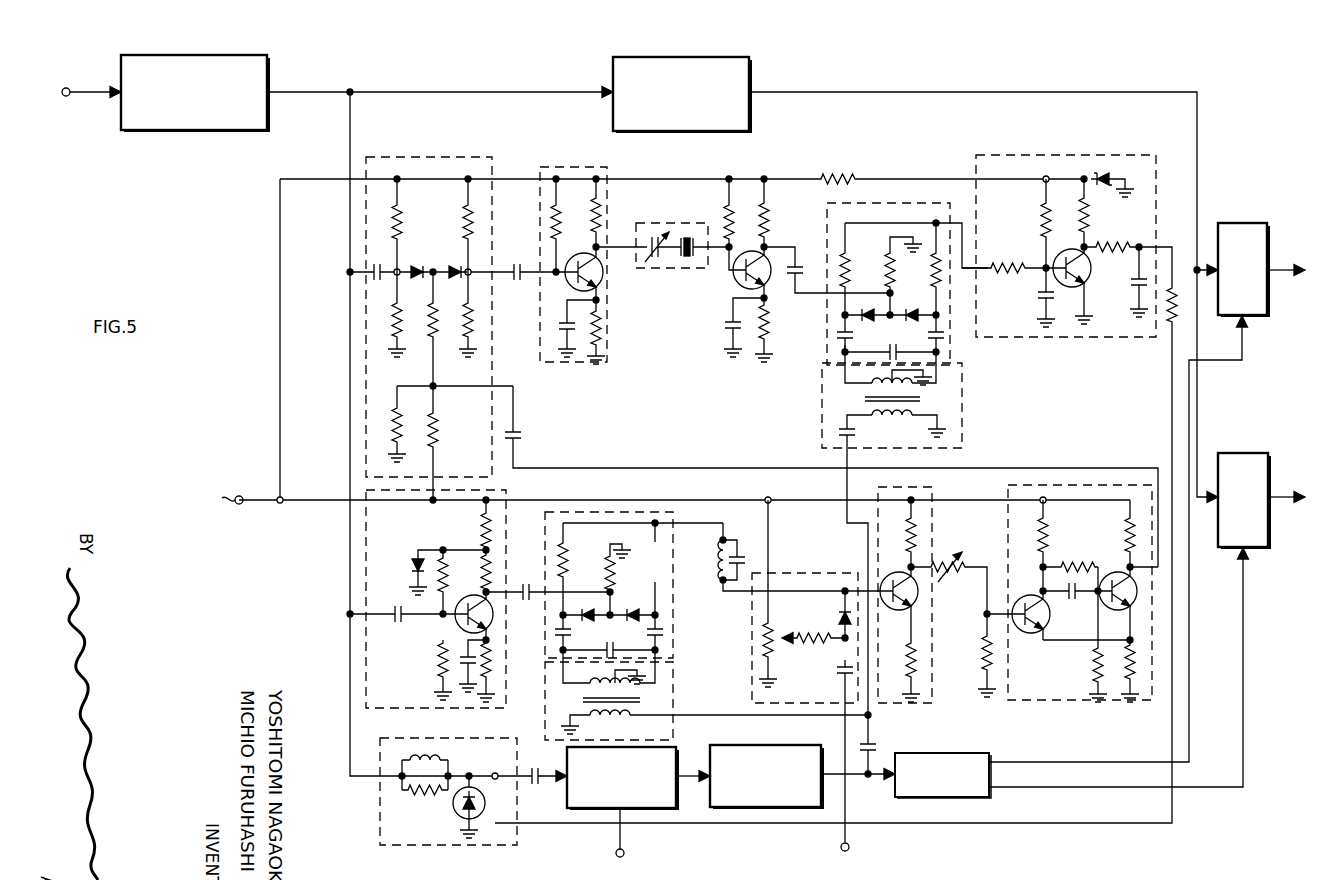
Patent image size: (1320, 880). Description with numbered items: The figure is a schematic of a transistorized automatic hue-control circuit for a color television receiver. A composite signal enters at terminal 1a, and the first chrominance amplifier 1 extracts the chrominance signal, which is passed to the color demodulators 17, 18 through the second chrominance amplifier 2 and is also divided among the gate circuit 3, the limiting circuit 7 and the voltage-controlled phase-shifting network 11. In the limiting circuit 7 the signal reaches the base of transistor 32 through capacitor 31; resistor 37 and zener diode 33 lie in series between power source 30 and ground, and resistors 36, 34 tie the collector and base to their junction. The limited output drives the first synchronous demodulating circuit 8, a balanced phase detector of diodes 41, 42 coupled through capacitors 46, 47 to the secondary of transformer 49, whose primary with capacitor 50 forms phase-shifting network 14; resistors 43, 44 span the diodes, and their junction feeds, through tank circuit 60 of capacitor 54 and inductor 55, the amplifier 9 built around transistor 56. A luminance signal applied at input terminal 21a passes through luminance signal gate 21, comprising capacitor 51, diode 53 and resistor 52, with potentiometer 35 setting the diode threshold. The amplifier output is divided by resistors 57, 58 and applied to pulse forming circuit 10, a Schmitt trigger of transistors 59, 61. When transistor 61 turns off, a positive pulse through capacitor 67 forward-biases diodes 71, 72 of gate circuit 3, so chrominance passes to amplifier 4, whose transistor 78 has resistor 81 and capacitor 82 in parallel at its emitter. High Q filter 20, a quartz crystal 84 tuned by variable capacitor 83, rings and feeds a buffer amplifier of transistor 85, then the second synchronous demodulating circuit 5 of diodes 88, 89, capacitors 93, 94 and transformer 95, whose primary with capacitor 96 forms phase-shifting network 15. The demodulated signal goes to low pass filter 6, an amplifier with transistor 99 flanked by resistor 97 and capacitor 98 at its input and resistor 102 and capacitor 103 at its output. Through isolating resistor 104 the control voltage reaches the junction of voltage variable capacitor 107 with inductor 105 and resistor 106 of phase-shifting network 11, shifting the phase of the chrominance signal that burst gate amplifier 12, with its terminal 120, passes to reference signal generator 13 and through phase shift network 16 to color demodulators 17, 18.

The first chrominance amplifier 1 is at (203, 56).
The input terminal 1a is at (63, 88).
The second chrominance amplifier 2 is at (682, 94).
The gate circuit 3 is at (446, 311).
The amplifier 4 is at (572, 282).
The second synchronous demodulating circuit 5 is at (888, 267).
The low pass filter 6 is at (1067, 227).
The limiting circuit 7 is at (459, 599).
The first synchronous demodulating circuit 8 is at (615, 569).
The amplifier 9 is at (920, 609).
The pulse forming circuit 10 is at (1072, 609).
The voltage controlled phase-shifting network 11 is at (443, 779).
The burst gate amplifier 12 is at (567, 797).
The reference signal generator 13 is at (766, 808).
The phase-shifting network 14 is at (686, 695).
The phase-shifting network 15 is at (889, 568).
The phase shift network 16 is at (955, 762).
The color demodulator 17 is at (1230, 223).
The color demodulator 18 is at (1240, 453).
The high Q filter 20 is at (682, 245).
The luminance signal gate 21 is at (793, 687).
The input terminal 21a is at (846, 859).
The power source 30 is at (219, 500).
The capacitor 31 is at (392, 623).
The transistor 32 is at (494, 623).
The zener diode 33 is at (413, 560).
The resistor 34 is at (443, 612).
The potentiometer 35 is at (762, 641).
The resistor 36 is at (478, 572).
The resistor 37 is at (479, 532).
The diode 41 is at (592, 620).
The diode 42 is at (636, 612).
The resistor 43 is at (568, 570).
The resistor 44 is at (612, 566).
The capacitor 46 is at (560, 636).
The capacitor 47 is at (661, 632).
The transformer 49 is at (583, 700).
The capacitor 50 is at (869, 743).
The capacitor 51 is at (845, 679).
The resistor 52 is at (814, 650).
The diode 53 is at (840, 614).
The capacitor 54 is at (745, 558).
The inductor 55 is at (713, 578).
The transistor 56 is at (921, 596).
The resistor 57 is at (958, 556).
The resistor 58 is at (980, 652).
The transistor 59 is at (1028, 636).
The tank circuit 60 is at (730, 538).
The transistor 61 is at (1120, 571).
The capacitor 67 is at (516, 430).
The diode 71 is at (416, 266).
The diode 72 is at (458, 266).
The transistor 78 is at (598, 280).
The resistor 81 is at (603, 322).
The capacitor 82 is at (555, 320).
The capacitor 83 is at (656, 262).
The quartz crystal 84 is at (687, 262).
The transistor 85 is at (772, 284).
The diode 88 is at (870, 321).
The diode 89 is at (913, 306).
The capacitor 93 is at (833, 340).
The capacitor 94 is at (948, 340).
The transformer 95 is at (945, 397).
The capacitor 96 is at (835, 432).
The resistor 97 is at (1002, 262).
The capacitor 98 is at (1040, 297).
The transistor 99 is at (1088, 266).
The resistor 102 is at (1117, 240).
The capacitor 103 is at (1128, 290).
The isolating resistor 104 is at (1168, 330).
The inductor 105 is at (428, 757).
The resistor 106 is at (422, 797).
The voltage variable capacitor 107 is at (456, 819).
The burst gate amplifier output terminal 120 is at (622, 813).